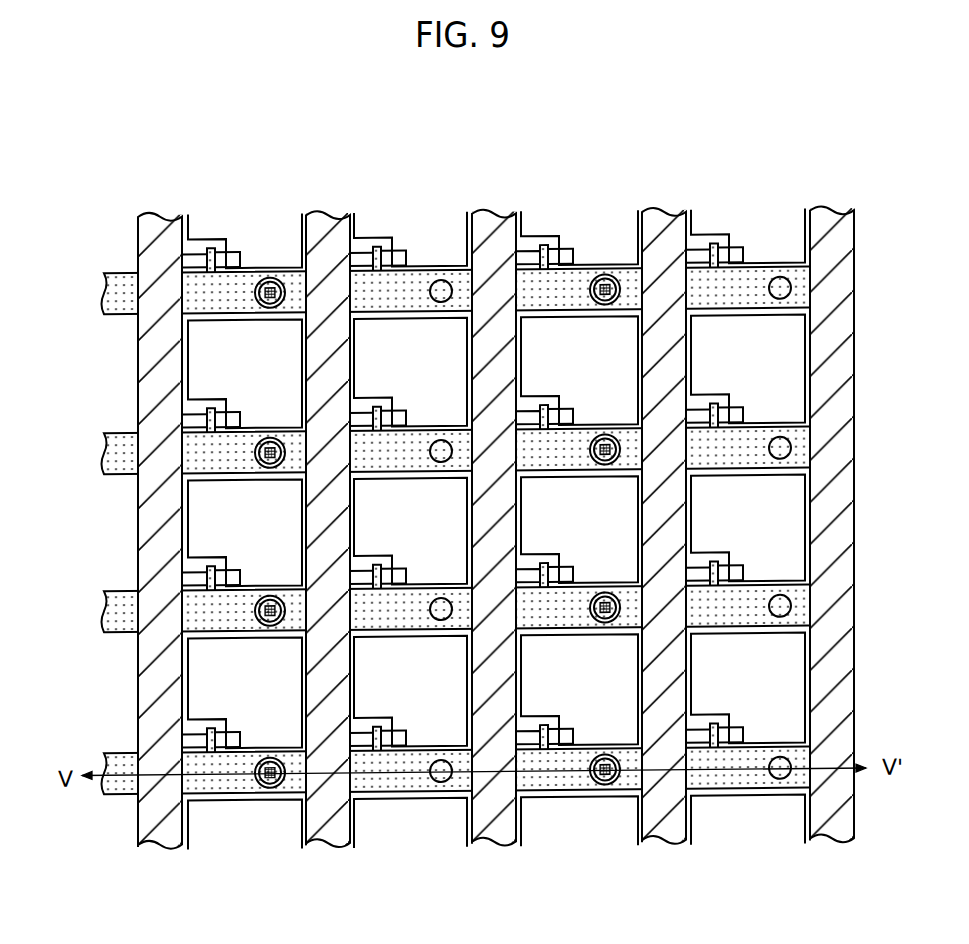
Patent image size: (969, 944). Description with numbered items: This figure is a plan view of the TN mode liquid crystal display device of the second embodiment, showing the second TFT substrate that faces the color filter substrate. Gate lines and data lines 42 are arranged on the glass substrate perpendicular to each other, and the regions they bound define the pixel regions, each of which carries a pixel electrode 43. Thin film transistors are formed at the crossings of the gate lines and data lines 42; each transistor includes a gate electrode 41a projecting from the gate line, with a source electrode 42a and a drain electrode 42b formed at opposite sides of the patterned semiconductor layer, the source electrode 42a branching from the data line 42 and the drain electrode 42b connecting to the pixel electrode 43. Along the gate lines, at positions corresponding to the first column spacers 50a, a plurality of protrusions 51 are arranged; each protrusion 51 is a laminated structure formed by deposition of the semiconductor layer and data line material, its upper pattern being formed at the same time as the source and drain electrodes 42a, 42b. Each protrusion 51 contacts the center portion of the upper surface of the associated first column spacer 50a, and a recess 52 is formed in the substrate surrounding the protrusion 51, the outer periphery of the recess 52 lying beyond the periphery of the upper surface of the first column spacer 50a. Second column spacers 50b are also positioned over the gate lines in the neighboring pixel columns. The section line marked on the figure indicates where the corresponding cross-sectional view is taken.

The pixel electrode 43 is at (208, 677).
The gate electrode 41a is at (205, 724).
The data line 42 is at (135, 826).
The source electrode 42a is at (188, 743).
The drain electrode 42b is at (220, 748).
The protrusion 51 is at (259, 782).
The recess 52 is at (273, 789).
The first column spacer 50a is at (265, 781).
The second column spacer 50b is at (441, 785).